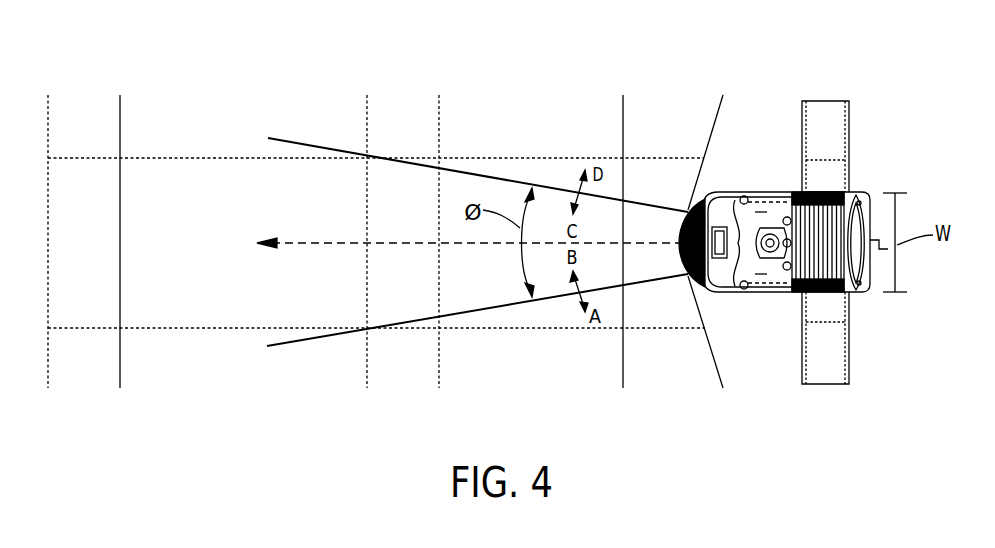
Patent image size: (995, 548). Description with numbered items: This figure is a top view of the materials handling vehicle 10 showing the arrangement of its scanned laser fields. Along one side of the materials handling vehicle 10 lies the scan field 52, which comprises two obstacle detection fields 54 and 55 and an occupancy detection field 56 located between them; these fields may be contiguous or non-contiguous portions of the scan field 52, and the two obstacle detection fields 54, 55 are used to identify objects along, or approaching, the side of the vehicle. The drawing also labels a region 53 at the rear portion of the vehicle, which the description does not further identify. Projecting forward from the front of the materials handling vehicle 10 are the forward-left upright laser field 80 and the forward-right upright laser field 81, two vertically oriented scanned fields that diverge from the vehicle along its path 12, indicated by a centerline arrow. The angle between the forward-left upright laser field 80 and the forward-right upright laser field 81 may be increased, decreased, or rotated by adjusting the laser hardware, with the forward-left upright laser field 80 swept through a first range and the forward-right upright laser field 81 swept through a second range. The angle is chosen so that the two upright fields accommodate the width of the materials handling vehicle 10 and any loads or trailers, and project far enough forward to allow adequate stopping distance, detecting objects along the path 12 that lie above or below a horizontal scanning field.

The materials handling vehicle 10 is at (802, 233).
The path 12 is at (305, 240).
The scan field 52 is at (830, 72).
The vehicle rear section 53 is at (782, 306).
The obstacle detection field 54 is at (817, 144).
The obstacle detection field 55 is at (817, 369).
The occupancy detection field 56 is at (817, 189).
The forward-left upright laser field 80 is at (308, 142).
The forward-right upright laser field 81 is at (315, 340).